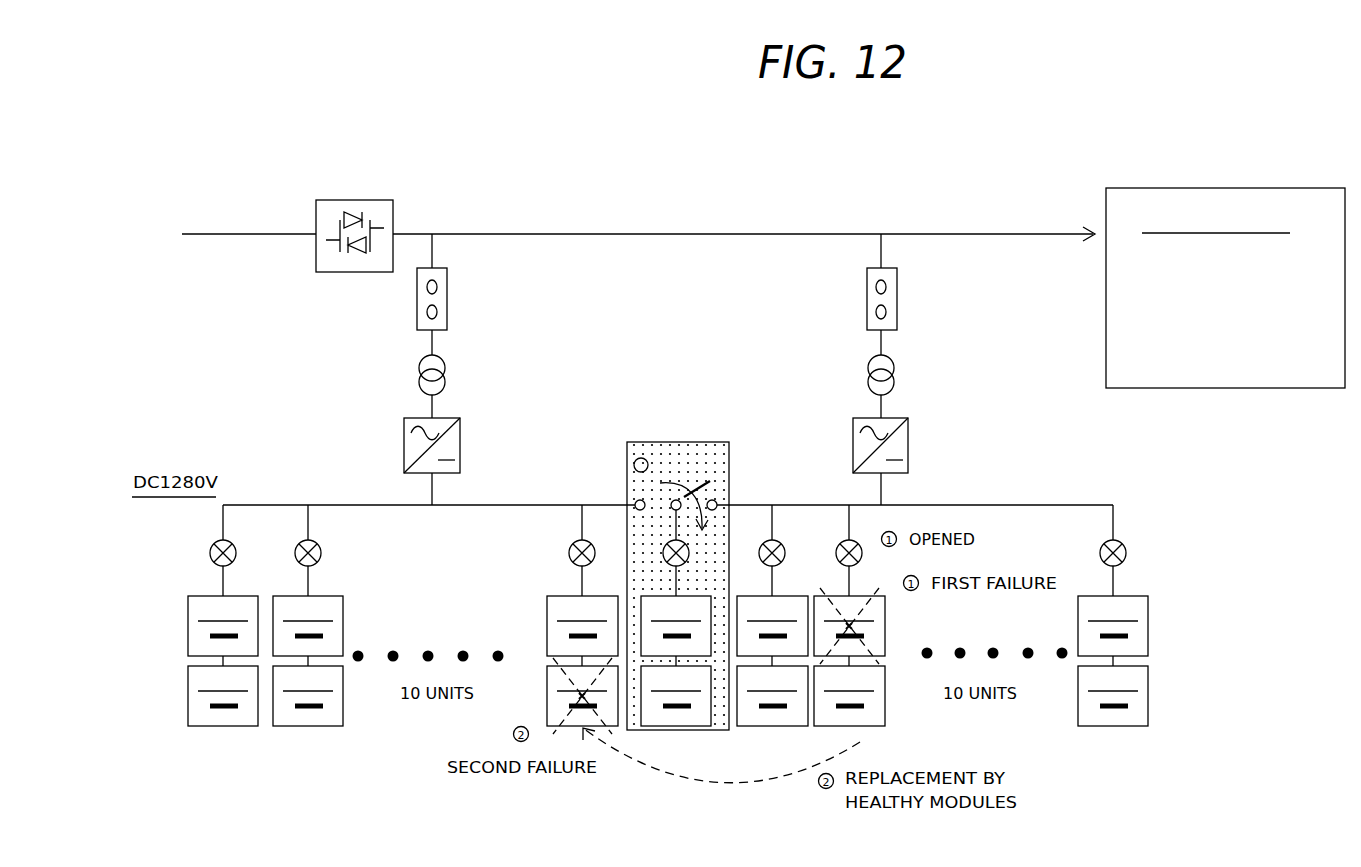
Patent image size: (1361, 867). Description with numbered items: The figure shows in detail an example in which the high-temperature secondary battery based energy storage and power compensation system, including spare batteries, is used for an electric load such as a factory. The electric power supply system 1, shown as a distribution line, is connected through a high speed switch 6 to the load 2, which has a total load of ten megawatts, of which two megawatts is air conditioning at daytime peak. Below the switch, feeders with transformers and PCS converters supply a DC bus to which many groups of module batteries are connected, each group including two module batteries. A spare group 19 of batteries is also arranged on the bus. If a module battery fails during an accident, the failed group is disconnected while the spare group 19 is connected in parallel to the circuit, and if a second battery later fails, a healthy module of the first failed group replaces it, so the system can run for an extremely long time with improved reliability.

The electric power supply system 1 is at (225, 234).
The load 2 is at (1243, 188).
The high speed switch 6 is at (393, 218).
The spare group 19 is at (680, 390).